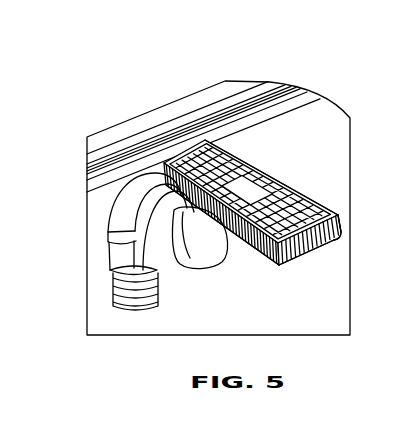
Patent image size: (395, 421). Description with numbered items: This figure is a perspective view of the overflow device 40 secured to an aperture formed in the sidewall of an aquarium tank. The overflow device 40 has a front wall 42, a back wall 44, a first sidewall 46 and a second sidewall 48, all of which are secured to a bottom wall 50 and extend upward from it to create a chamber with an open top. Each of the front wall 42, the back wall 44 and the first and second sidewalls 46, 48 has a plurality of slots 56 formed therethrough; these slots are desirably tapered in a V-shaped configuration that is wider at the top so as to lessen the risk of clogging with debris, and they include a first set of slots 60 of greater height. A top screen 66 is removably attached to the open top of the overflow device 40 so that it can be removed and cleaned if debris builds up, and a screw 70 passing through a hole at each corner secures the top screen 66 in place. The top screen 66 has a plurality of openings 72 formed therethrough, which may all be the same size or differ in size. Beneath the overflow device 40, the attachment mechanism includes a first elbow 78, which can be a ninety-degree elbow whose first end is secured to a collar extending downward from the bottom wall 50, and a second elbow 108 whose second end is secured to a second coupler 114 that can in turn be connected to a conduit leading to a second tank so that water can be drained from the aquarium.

The overflow device 40 is at (318, 52).
The front wall 42 is at (328, 251).
The back wall 44 is at (226, 145).
The first sidewall 46 is at (265, 250).
The second sidewall 48 is at (344, 231).
The bottom wall 50 is at (250, 245).
The plurality of slots 56 is at (310, 187).
The first set of slots 60 is at (312, 247).
The top screen 66 is at (283, 172).
The screw 70 is at (222, 132).
The plurality of openings 72 is at (266, 162).
The first elbow 78 is at (213, 258).
The second elbow 108 is at (113, 206).
The second coupler 114 is at (112, 294).